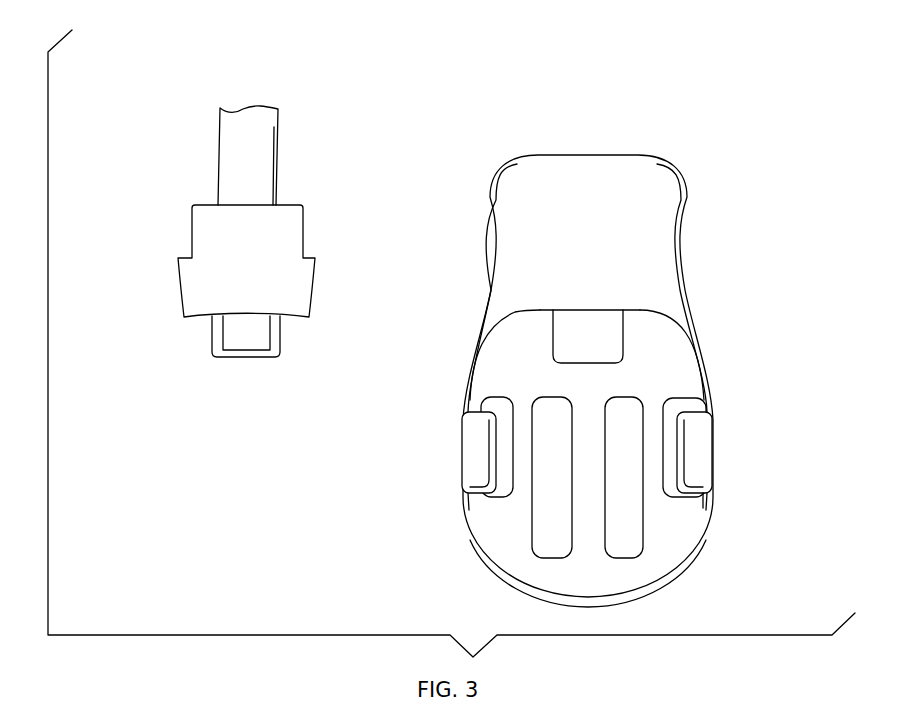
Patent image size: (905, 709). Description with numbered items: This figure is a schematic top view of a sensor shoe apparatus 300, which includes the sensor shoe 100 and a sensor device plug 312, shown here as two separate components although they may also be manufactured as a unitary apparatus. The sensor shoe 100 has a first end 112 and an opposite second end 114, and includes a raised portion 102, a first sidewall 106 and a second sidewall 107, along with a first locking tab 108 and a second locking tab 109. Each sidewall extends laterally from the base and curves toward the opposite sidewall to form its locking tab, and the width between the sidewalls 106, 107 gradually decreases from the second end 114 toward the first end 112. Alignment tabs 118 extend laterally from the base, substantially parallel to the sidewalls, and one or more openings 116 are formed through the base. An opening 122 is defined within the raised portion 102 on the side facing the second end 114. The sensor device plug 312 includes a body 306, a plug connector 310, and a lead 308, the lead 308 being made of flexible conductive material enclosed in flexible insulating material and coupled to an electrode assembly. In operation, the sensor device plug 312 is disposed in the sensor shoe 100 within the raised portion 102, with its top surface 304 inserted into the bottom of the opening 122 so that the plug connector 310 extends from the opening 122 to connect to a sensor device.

The sensor shoe 100 is at (687, 193).
The raised portion 102 is at (569, 182).
The first sidewall 106 is at (465, 385).
The second sidewall 107 is at (712, 381).
The first locking tab 108 is at (477, 457).
The second locking tab 109 is at (696, 445).
The first end 112 is at (630, 122).
The second end 114 is at (622, 598).
The openings 116 is at (673, 497).
The alignment tabs 118 is at (712, 500).
The opening 122 is at (595, 323).
The sensor shoe apparatus 300 is at (375, 60).
The top surface 304 is at (244, 262).
The body 306 is at (265, 230).
The lead 308 is at (260, 125).
The plug connector 310 is at (282, 338).
The sensor device plug 312 is at (310, 183).